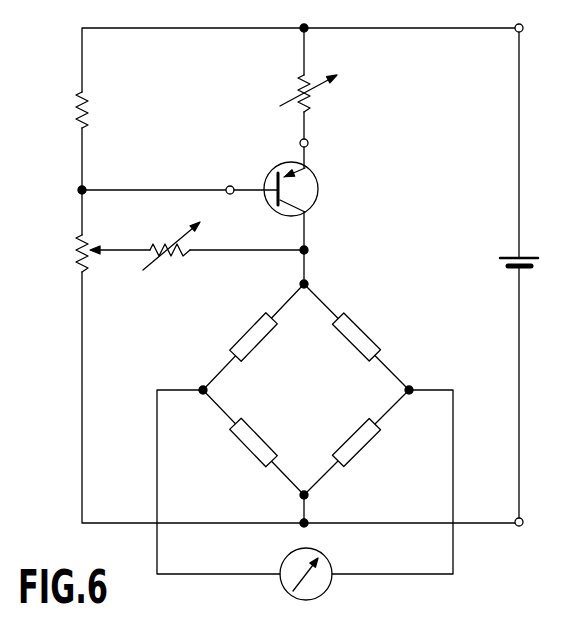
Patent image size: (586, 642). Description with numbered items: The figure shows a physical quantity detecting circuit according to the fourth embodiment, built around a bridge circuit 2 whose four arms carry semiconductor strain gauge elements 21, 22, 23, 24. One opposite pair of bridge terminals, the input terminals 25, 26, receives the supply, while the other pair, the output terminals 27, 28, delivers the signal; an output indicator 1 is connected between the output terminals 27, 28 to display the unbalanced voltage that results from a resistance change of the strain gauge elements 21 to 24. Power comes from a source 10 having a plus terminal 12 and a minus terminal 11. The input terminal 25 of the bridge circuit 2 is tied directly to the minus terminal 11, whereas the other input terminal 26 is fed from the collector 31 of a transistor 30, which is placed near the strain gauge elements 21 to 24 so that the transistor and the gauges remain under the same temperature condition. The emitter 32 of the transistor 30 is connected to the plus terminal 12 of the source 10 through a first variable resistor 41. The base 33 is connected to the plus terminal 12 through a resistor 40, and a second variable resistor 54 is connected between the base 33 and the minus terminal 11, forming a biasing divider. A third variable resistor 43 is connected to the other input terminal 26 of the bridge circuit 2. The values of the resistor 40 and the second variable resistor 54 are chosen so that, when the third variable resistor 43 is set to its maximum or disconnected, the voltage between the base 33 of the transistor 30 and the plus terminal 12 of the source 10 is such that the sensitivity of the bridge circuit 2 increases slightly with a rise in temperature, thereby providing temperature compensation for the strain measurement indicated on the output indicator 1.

The output indicator 1 is at (332, 564).
The bridge circuit 2 is at (311, 386).
The source 10 is at (505, 256).
The minus terminal 11 is at (514, 518).
The plus terminal 12 is at (521, 32).
The semiconductor strain gauge element 21 is at (259, 325).
The semiconductor strain gauge element 22 is at (233, 452).
The semiconductor strain gauge element 23 is at (370, 451).
The semiconductor strain gauge element 24 is at (362, 326).
The input terminal 25 is at (301, 498).
The input terminal 26 is at (302, 282).
The output terminal 27 is at (199, 387).
The output terminal 28 is at (411, 387).
The transistor 30 is at (318, 192).
The collector 31 is at (308, 249).
The emitter 32 is at (308, 143).
The base 33 is at (229, 186).
The resistor 40 is at (84, 126).
The first variable resistor 41 is at (307, 110).
The third variable resistor 43 is at (188, 253).
The second variable resistor 54 is at (75, 269).